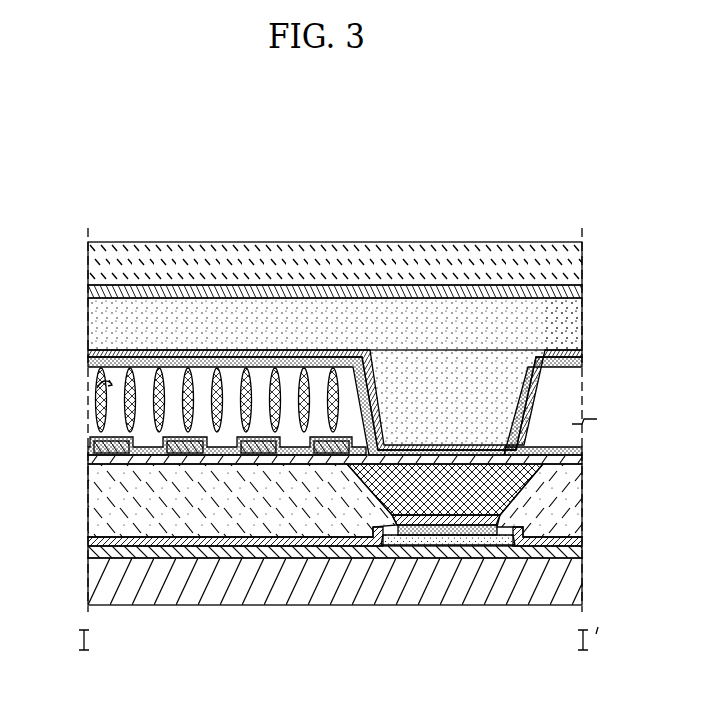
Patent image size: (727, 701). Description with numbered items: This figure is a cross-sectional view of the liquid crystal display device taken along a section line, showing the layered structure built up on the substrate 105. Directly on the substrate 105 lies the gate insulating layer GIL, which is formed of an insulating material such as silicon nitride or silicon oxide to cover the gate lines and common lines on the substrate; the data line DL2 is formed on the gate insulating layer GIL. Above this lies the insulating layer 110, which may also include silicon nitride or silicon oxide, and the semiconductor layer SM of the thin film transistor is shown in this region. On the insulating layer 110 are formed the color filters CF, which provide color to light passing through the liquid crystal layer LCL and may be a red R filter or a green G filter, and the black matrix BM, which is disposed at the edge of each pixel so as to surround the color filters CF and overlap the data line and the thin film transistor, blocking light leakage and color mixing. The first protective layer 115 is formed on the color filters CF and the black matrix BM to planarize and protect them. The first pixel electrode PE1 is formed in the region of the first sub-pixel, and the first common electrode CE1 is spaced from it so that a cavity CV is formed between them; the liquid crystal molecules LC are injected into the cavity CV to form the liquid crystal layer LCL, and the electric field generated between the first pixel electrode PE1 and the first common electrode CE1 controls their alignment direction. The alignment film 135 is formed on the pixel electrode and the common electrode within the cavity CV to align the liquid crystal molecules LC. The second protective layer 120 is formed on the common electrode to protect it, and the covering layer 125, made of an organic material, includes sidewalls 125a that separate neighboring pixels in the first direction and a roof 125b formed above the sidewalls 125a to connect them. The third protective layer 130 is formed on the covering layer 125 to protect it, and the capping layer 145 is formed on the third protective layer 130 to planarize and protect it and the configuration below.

The substrate 105 is at (100, 584).
The insulating layer 110 is at (100, 541).
The first protective layer 115 is at (97, 459).
The second protective layer 120 is at (304, 288).
The covering layer 125 is at (476, 288).
The sidewall 125a is at (443, 417).
The roof 125b is at (568, 330).
The third protective layer 130 is at (97, 294).
The alignment film 135 is at (97, 363).
The capping layer 145 is at (98, 264).
The first common electrode CE1 is at (97, 354).
The cavity CV is at (97, 388).
The liquid crystal layer LCL is at (185, 414).
The liquid crystal molecules LC is at (128, 421).
The color filter CF is at (307, 500).
The red filter R is at (242, 500).
The green filter G is at (539, 500).
The black matrix BM is at (445, 489).
The gate insulating layer GIL is at (105, 551).
The first pixel electrode PE1 is at (330, 452).
The data line DL2 is at (433, 544).
The semiconductor layer SM is at (477, 535).